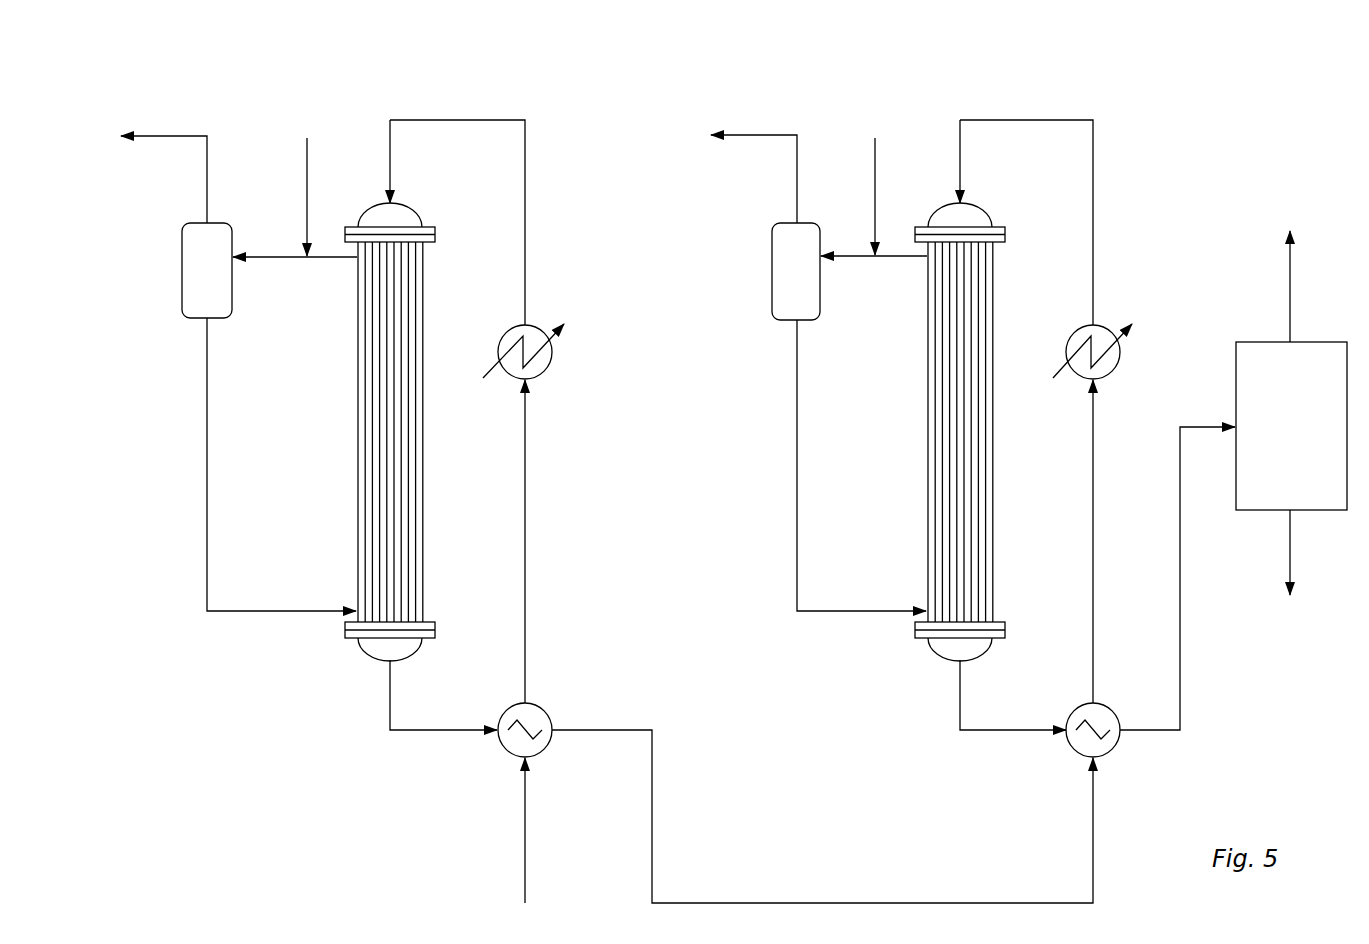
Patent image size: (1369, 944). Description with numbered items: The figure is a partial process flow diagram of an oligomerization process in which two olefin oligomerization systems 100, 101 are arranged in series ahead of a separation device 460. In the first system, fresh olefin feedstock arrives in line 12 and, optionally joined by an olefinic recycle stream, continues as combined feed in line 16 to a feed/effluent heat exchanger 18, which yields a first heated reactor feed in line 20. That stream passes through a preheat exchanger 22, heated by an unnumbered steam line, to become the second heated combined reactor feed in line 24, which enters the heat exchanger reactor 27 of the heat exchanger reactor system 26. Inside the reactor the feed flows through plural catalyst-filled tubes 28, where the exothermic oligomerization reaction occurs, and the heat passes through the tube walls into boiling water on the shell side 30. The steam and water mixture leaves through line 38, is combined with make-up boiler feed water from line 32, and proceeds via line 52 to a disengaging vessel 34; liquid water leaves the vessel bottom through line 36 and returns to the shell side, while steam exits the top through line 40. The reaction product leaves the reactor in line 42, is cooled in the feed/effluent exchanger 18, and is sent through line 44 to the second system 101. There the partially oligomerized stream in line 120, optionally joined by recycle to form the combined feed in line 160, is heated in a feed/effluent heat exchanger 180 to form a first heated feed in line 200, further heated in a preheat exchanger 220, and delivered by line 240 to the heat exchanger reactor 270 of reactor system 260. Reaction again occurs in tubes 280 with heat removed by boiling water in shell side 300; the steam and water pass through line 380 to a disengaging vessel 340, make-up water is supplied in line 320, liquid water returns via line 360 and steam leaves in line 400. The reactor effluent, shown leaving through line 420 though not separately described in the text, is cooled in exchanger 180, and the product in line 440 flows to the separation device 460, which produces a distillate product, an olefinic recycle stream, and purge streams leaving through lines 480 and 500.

The feedstock line 12 is at (525, 855).
The combined feed line 16 is at (525, 805).
The feed/effluent heat exchanger 18 is at (540, 706).
The first heated reactor feed line 20 is at (525, 490).
The preheat exchanger 22 is at (540, 327).
The second heated combined reactor feed line 24 is at (525, 185).
The heat exchanger reactor system 26 is at (355, 100).
The heat exchanger reactor 27 is at (415, 205).
The tubes 28 is at (418, 462).
The shell side 30 is at (357, 410).
The make-up boiler feed water line 32 is at (307, 170).
The disengaging vessel 34 is at (182, 240).
The liquid water return line 36 is at (207, 433).
The steam and water line 38 is at (343, 262).
The steam line 40 is at (207, 135).
The reaction product line 42 is at (390, 720).
The cooled reaction product line 44 is at (850, 903).
The disengaging vessel inlet line 52 is at (287, 253).
The olefin oligomerization system 100 is at (510, 107).
The olefin oligomerization system 101 is at (1085, 104).
The partially oligomerized stream line 120 is at (1093, 855).
The combined feed line 160 is at (1093, 805).
The feed/effluent heat exchanger 180 is at (1105, 706).
The first heated reactor feed line 200 is at (1093, 490).
The preheat exchanger 220 is at (1107, 327).
The second heated combined reactor feed line 240 is at (1093, 185).
The reactor system 260 is at (925, 100).
The heat exchanger reactor 270 is at (985, 205).
The tubes 280 is at (992, 462).
The shell side 300 is at (927, 410).
The make-up boiler feed water line 320 is at (875, 170).
The disengaging vessel 340 is at (772, 240).
The liquid water return line 360 is at (797, 433).
The steam and water line 380 is at (912, 262).
The steam line 400 is at (785, 134).
The second reactor effluent line 420 is at (959, 720).
The product line 440 is at (1180, 690).
The separation device 460 is at (1236, 383).
The purge stream line 480 is at (1290, 548).
The purge stream line 500 is at (1290, 297).